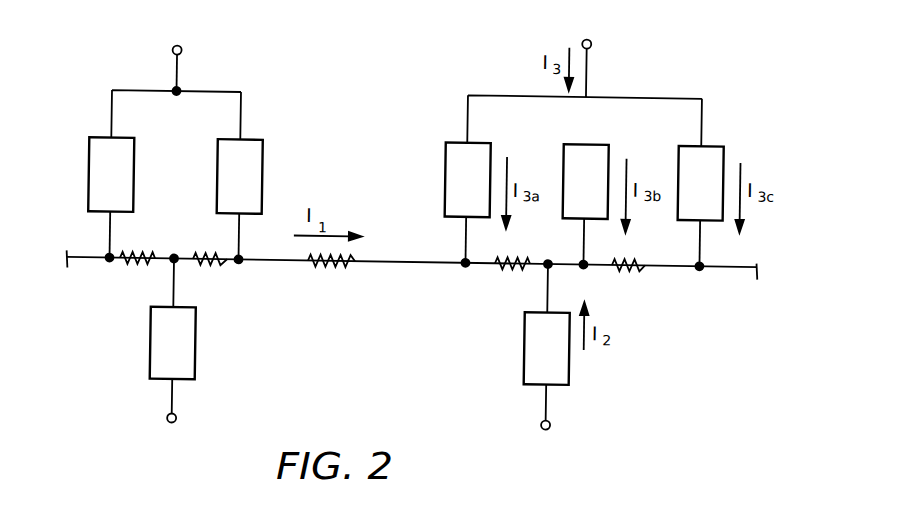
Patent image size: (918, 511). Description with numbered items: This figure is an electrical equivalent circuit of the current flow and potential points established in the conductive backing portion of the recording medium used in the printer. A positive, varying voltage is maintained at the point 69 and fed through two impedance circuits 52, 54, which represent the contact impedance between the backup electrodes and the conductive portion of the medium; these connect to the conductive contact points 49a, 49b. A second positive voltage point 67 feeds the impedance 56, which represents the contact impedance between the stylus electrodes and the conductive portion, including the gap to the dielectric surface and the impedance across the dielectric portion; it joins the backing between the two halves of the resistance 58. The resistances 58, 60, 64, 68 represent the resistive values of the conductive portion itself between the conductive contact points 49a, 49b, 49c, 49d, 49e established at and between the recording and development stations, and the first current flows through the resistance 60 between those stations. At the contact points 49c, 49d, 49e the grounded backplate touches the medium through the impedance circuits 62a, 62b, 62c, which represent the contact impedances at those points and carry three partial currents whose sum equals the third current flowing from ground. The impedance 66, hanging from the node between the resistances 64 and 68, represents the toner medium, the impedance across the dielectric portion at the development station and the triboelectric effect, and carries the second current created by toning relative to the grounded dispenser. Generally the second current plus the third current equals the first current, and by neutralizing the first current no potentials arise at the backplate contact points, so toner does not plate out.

The conductive contact point 49a is at (112, 263).
The conductive contact point 49b is at (241, 263).
The conductive contact point 49c is at (467, 263).
The conductive contact point 49d is at (588, 263).
The conductive contact point 49e is at (702, 263).
The impedance circuit 52 is at (100, 138).
The impedance circuit 54 is at (260, 138).
The impedance 56 is at (199, 354).
The resistance 58 is at (200, 250).
The resistance 60 is at (343, 264).
The impedance circuit 62a is at (446, 165).
The impedance circuit 62b is at (564, 158).
The impedance circuit 62c is at (679, 158).
The resistance 64 is at (511, 265).
The impedance 66 is at (528, 358).
The positive voltage point 67 is at (176, 423).
The resistance 68 is at (638, 264).
The positive voltage point 69 is at (172, 50).